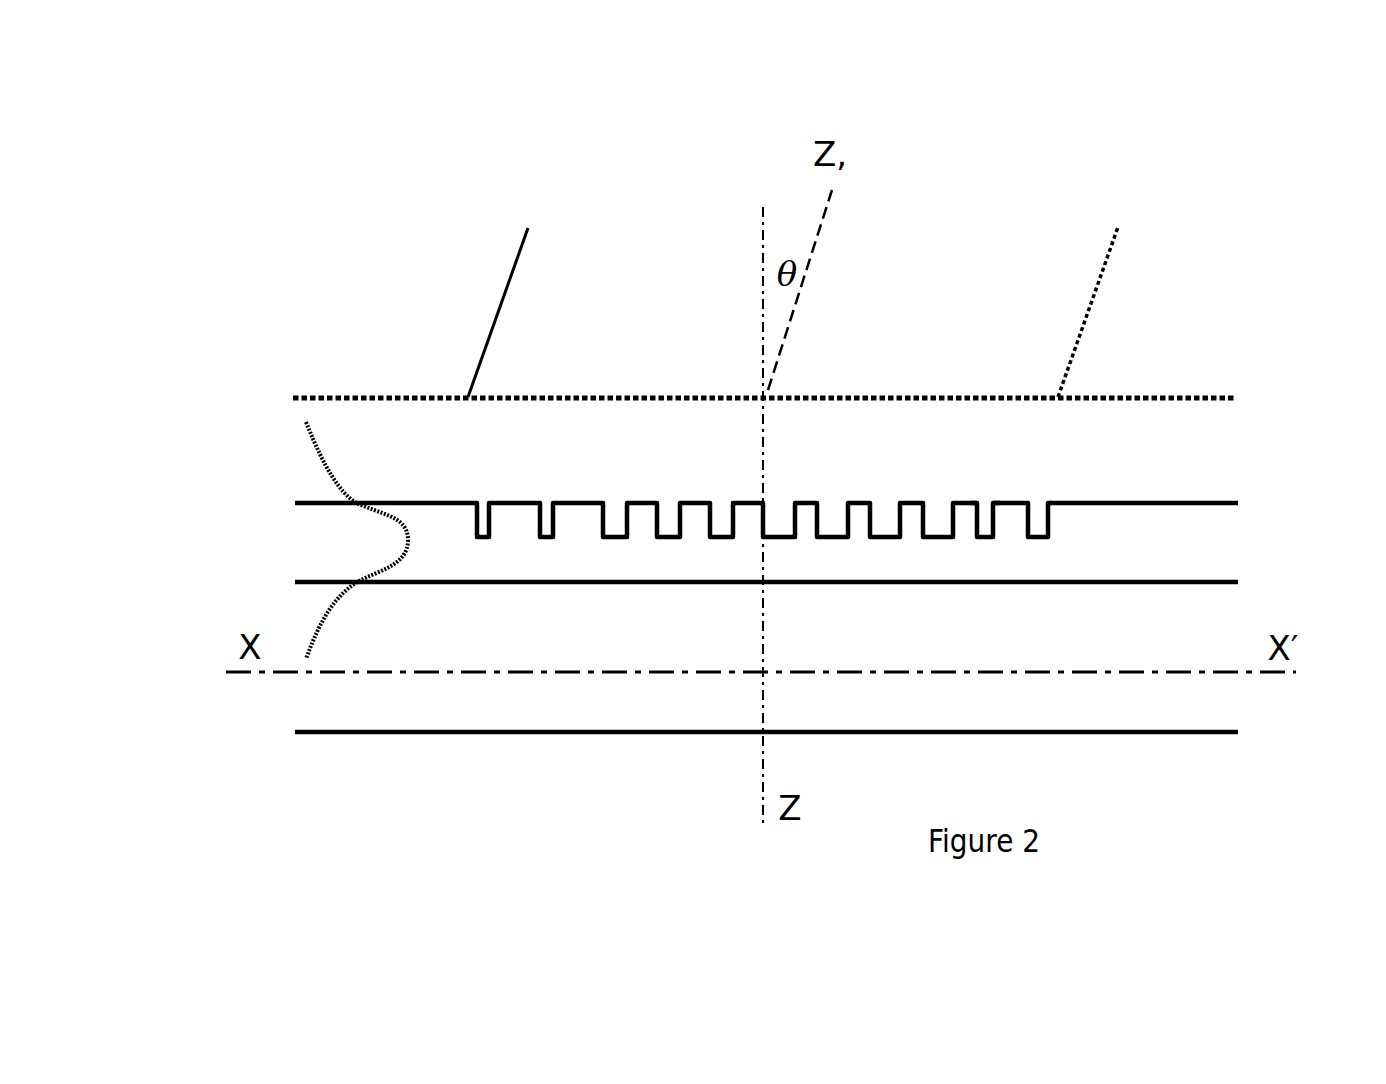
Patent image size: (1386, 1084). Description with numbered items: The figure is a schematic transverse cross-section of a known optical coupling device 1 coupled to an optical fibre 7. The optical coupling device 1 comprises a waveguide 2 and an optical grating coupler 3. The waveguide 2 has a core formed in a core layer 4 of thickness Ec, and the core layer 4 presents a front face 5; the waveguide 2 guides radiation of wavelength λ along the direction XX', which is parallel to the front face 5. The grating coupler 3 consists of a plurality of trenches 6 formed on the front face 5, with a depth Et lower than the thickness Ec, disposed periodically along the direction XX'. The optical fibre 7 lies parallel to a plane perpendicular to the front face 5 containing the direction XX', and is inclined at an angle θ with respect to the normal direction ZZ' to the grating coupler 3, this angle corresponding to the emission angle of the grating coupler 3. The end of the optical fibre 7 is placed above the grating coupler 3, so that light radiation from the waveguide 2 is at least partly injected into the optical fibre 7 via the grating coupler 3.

The optical coupling device 1 is at (248, 351).
The waveguide 2 is at (364, 550).
The optical grating coupler 3 is at (673, 434).
The core layer 4 is at (832, 456).
The front face 5 is at (1217, 502).
The trenches 6 is at (984, 533).
The optical fibre 7 is at (1122, 240).